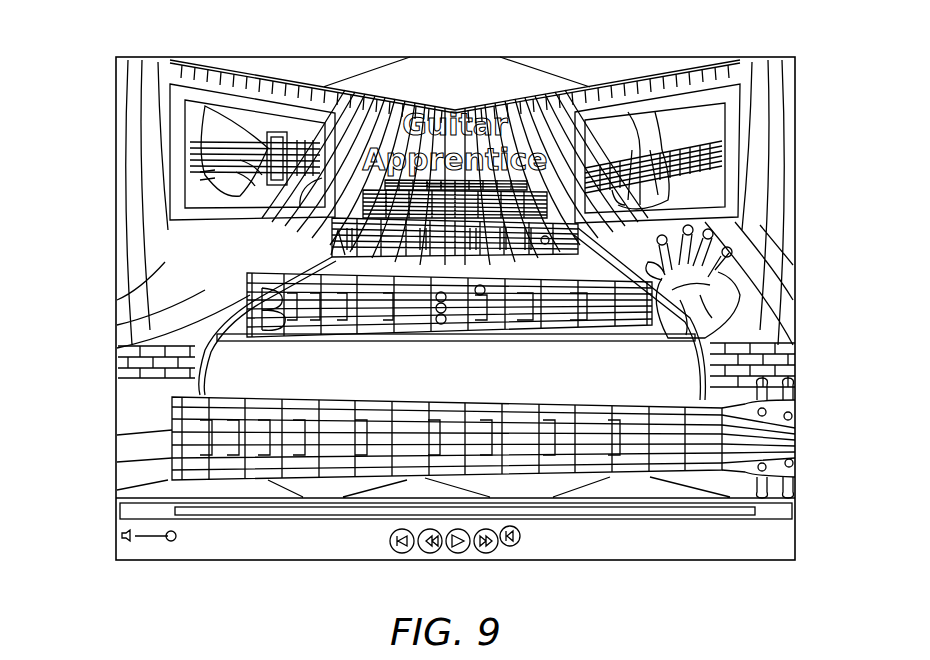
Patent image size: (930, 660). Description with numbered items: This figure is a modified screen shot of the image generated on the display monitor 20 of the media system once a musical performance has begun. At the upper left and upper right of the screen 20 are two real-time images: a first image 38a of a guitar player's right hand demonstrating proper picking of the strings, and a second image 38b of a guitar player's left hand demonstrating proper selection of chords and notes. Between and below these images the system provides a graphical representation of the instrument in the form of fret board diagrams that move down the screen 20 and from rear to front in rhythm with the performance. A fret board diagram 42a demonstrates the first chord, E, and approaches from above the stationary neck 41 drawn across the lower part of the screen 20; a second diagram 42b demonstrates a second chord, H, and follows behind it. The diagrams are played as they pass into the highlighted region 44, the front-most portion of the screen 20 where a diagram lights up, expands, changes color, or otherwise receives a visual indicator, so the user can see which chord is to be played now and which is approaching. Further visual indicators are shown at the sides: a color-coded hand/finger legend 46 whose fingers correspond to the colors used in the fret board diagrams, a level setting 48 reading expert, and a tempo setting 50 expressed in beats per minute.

The display monitor 20 is at (95, 52).
The first image 38a is at (276, 120).
The second image 38b is at (695, 125).
The stationary neck 41 is at (778, 465).
The fret board diagram 42a is at (553, 253).
The second diagram 42b is at (697, 336).
The highlighted region 44 is at (785, 437).
The color-coded hand/finger legend 46 is at (705, 285).
The level setting 48 is at (150, 243).
The tempo setting 50 is at (168, 272).